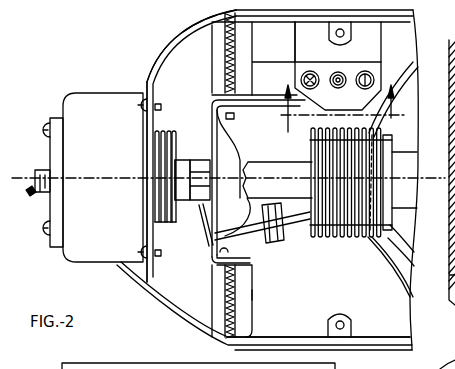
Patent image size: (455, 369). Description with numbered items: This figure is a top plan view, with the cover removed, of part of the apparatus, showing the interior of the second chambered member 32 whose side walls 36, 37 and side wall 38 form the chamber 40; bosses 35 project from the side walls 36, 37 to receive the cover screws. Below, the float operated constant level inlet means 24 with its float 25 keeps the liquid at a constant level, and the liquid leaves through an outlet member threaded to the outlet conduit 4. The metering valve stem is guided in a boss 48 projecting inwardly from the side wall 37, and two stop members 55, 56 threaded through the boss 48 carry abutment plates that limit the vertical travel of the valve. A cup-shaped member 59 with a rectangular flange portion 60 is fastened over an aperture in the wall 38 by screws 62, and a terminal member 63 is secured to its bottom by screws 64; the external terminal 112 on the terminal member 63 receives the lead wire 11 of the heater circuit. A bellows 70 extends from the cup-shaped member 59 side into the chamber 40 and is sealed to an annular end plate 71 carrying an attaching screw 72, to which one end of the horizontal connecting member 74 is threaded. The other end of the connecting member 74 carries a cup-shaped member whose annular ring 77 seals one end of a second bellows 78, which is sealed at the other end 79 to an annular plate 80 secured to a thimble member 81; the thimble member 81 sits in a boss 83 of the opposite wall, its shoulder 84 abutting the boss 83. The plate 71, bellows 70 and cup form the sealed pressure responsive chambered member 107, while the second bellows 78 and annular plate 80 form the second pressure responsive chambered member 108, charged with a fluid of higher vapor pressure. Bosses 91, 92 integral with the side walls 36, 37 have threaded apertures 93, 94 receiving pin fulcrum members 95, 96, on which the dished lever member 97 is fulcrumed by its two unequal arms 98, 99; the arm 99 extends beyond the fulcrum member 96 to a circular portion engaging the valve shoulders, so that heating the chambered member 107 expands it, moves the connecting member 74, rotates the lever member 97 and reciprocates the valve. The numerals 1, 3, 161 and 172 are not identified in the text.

The electrical machine / housing 1 is at (226, 184).
The adjacent part 3 is at (450, 157).
The outlet conduit 4 is at (343, 118).
The lead wire 11 is at (36, 193).
The constant level inlet means 24 is at (283, 244).
The float 25 is at (398, 270).
The second chambered member 32 is at (147, 76).
The bosses 35 is at (348, 30).
The side wall 36 is at (283, 336).
The side wall 37 is at (288, 25).
The side wall 38 is at (160, 84).
The chamber 40 is at (192, 316).
The boss 48 is at (378, 54).
The stop member 55 is at (364, 71).
The stop member 56 is at (312, 70).
The cup-shaped member 59 is at (88, 257).
The flange portion 60 is at (147, 170).
The screws 62 is at (138, 110).
The terminal member 63 is at (52, 152).
The screws 64 is at (44, 127).
The bellows 70 is at (165, 226).
The annular end plate 71 is at (176, 152).
The attaching screw 72 is at (180, 158).
The connecting member 74 is at (197, 206).
The annular ring 77 is at (275, 237).
The bellows 78 is at (331, 240).
The sealed end 79 is at (395, 250).
The annular plate 80 is at (392, 238).
The thimble member 81 is at (397, 140).
The boss 83 is at (418, 206).
The shoulder 84 is at (395, 164).
The boss 91 is at (253, 295).
The boss 92 is at (252, 62).
The threaded aperture 93 is at (218, 339).
The threaded aperture 94 is at (212, 17).
The pin fulcrum member 95 is at (218, 262).
The pin fulcrum member 96 is at (252, 97).
The lever member 97 is at (245, 152).
The arm 98 is at (248, 253).
The arm 99 is at (243, 104).
The pressure responsive chambered member 107 is at (164, 130).
The second pressure responsive chambered member 108 is at (358, 240).
The external terminal 112 is at (50, 184).
The base plate 161 is at (100, 362).
The base edge 172 is at (413, 368).